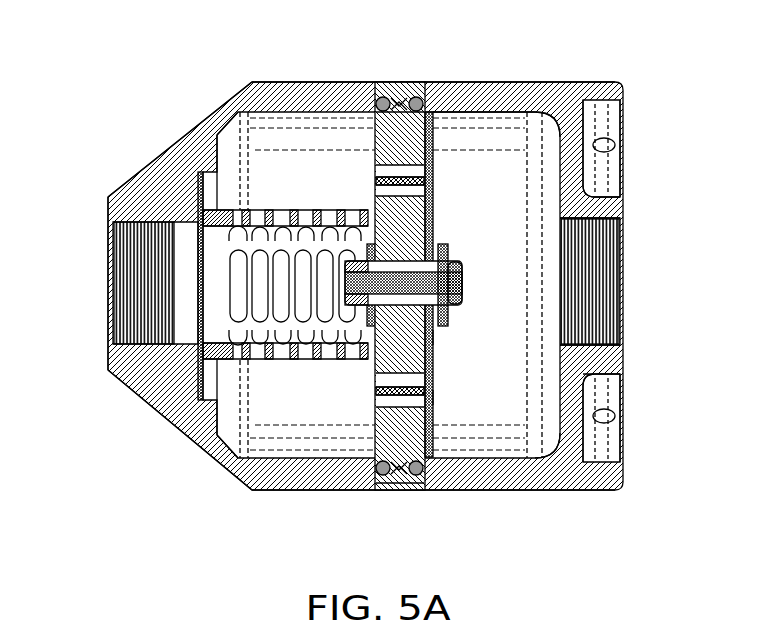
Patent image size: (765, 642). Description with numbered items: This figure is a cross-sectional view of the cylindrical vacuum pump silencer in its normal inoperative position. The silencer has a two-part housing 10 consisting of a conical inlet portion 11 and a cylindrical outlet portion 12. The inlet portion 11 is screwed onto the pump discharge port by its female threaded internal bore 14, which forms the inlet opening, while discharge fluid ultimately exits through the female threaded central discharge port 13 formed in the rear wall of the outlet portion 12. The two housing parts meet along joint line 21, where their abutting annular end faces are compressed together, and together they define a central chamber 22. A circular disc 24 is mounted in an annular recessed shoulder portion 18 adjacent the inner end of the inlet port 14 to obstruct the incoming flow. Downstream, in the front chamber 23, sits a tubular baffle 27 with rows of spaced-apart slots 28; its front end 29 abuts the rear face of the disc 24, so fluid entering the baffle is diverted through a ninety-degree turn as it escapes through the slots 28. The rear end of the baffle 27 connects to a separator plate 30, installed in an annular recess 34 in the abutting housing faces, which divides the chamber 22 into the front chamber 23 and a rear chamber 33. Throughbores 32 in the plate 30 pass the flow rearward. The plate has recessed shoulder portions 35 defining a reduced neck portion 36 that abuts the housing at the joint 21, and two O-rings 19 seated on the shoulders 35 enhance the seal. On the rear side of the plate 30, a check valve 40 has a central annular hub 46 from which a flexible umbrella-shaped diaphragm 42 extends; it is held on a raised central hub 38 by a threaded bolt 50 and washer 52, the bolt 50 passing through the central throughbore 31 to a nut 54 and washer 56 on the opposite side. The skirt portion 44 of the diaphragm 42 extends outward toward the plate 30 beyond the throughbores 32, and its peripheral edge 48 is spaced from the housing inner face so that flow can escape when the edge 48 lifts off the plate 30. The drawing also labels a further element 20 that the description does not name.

The housing 10 is at (112, 118).
The conical inlet portion 11 is at (133, 176).
The cylindrical outlet portion 12 is at (487, 96).
The female threaded central discharge port 13 is at (606, 282).
The female threaded internal bore 14 is at (117, 284).
The annular recessed shoulder portion 18 is at (190, 443).
The O-rings 19 is at (365, 130).
The bottom wall 20 is at (505, 455).
The joint line 21 is at (413, 94).
The central chamber 22 is at (227, 465).
The front chamber 23 is at (283, 405).
The circular disc 24 is at (198, 329).
The baffle 27 is at (110, 216).
The slots 28 is at (241, 251).
The front end of baffle 29 is at (217, 287).
The separator plate 30 is at (379, 225).
The central throughbore 31 is at (378, 430).
The throughbores 32 is at (433, 150).
The rear chamber 33 is at (470, 195).
The annular recess 34 is at (428, 113).
The recessed shoulder portions 35 is at (384, 94).
The reduced neck portion 36 is at (397, 92).
The raised central hub 38 is at (448, 317).
The check valve 40 is at (446, 337).
The diaphragm 42 is at (442, 395).
The skirt portion 44 is at (507, 98).
The central annular hub 46 is at (618, 212).
The peripheral edge 48 is at (426, 490).
The threaded bolt 50 is at (365, 258).
The washer 52 is at (448, 262).
The nut 54 is at (262, 251).
The washer 56 is at (318, 432).